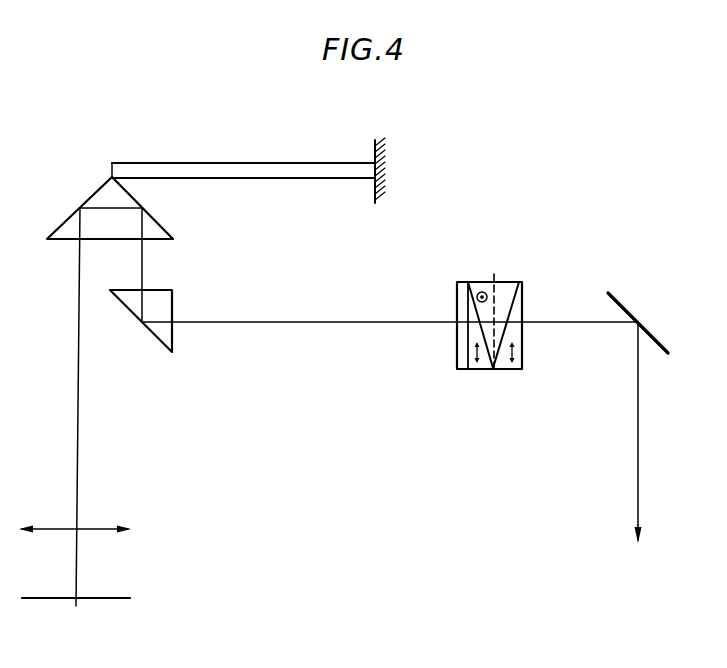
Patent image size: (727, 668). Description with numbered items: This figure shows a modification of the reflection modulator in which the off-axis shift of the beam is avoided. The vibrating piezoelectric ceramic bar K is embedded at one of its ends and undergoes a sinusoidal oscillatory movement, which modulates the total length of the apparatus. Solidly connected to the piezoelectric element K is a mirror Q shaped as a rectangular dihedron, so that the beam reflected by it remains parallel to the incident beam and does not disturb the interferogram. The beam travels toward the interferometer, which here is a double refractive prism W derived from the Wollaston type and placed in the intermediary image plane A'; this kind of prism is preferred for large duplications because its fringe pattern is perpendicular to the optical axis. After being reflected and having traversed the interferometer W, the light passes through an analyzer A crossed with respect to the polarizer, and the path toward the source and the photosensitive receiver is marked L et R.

The piezoelectric ceramic bar K is at (248, 170).
The mirror shaped as a rectangular dihedron Q is at (115, 208).
The double refractive prism W is at (489, 311).
The intermediary image plane A' is at (499, 392).
The analyzer A is at (87, 569).
The source and photosensitive receiver L et R is at (633, 554).